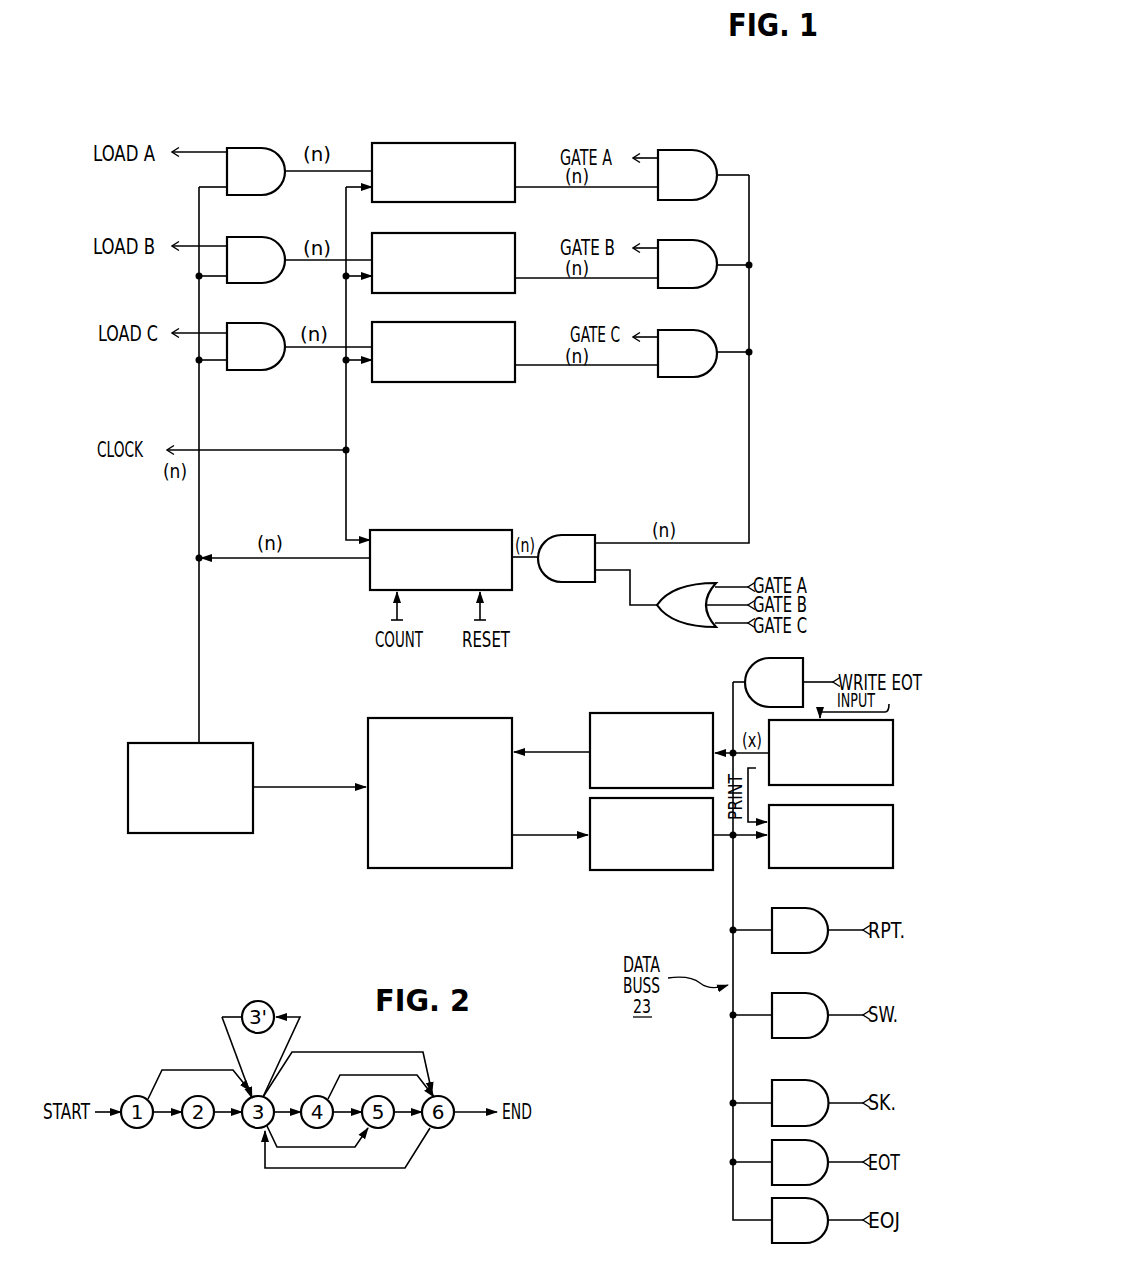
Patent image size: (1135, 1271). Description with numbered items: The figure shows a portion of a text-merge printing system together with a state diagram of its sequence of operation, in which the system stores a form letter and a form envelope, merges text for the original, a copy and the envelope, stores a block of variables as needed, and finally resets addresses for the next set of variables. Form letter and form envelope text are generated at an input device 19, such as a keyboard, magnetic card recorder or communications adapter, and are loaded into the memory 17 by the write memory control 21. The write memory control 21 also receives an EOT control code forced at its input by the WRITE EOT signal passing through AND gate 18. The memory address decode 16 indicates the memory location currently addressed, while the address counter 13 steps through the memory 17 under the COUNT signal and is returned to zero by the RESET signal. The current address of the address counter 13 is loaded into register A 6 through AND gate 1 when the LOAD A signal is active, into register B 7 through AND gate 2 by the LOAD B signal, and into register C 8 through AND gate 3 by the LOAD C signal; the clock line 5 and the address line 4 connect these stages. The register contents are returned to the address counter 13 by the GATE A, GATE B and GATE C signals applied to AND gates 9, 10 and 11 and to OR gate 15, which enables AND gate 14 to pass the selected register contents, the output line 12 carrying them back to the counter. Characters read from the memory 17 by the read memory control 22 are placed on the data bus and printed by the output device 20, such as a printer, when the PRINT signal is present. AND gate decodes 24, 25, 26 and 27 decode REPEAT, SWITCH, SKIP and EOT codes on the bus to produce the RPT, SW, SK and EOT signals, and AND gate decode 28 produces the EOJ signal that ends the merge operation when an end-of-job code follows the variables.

The AND gate 1 is at (262, 148).
The AND gate 2 is at (262, 237).
The AND gate 3 is at (262, 323).
The address line 4 is at (199, 425).
The clock line 5 is at (346, 427).
The register A 6 is at (478, 143).
The register B 7 is at (498, 233).
The register C 8 is at (478, 322).
The AND gate 9 is at (712, 158).
The AND gate 10 is at (710, 243).
The AND gate 11 is at (708, 333).
The output line 12 is at (749, 508).
The address counter 13 is at (475, 530).
The AND gate 14 is at (575, 535).
The OR gate 15 is at (700, 583).
The memory address decode 16 is at (222, 743).
The memory 17 is at (470, 718).
The AND gate 18 is at (800, 658).
The input device 19 is at (885, 720).
The output device 20 is at (885, 806).
The write memory control 21 is at (668, 713).
The read memory control 22 is at (605, 870).
The AND gate decode 24 is at (815, 908).
The AND gate decode 25 is at (812, 993).
The AND gate decode 26 is at (812, 1080).
The AND gate decode 27 is at (815, 1140).
The AND gate decode 28 is at (815, 1198).